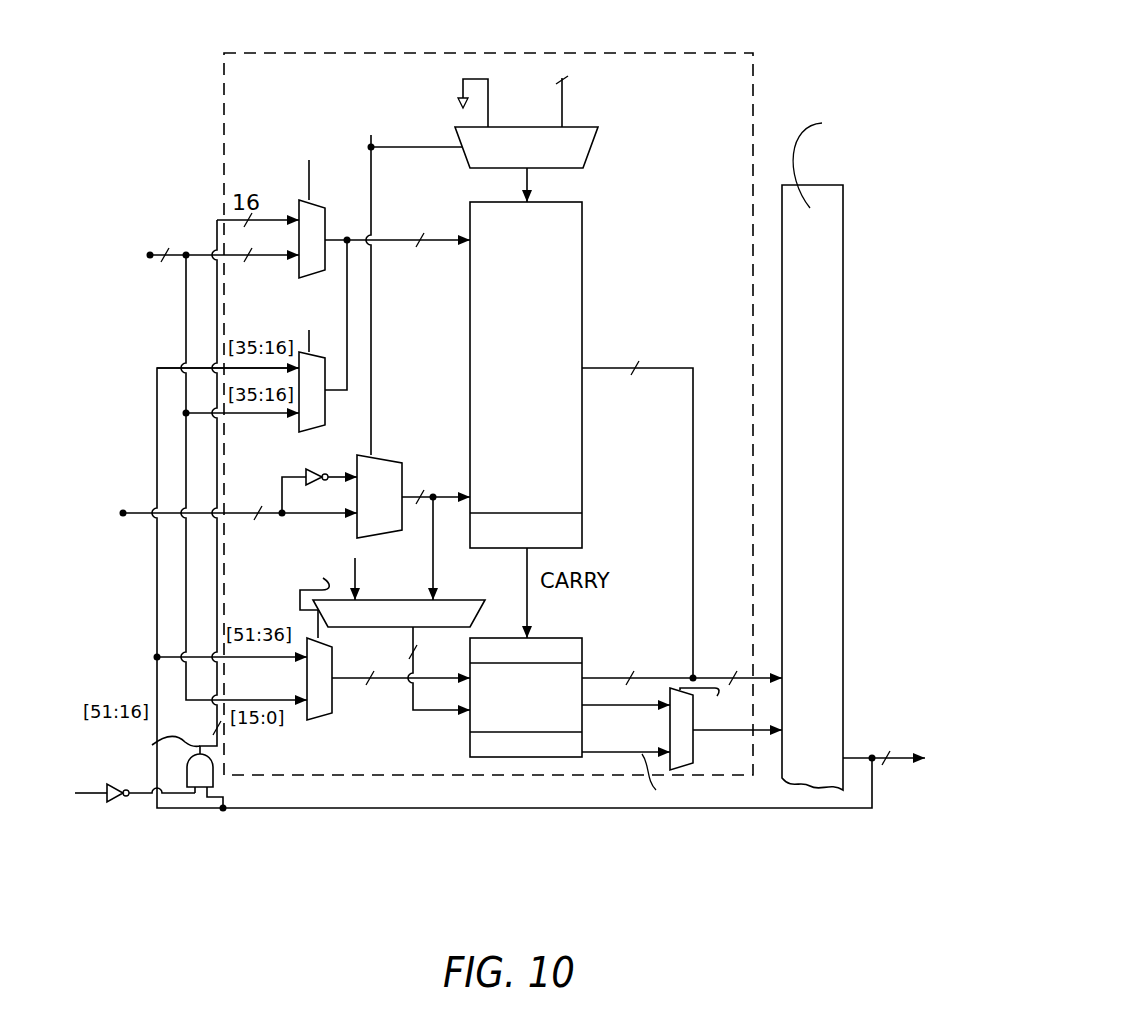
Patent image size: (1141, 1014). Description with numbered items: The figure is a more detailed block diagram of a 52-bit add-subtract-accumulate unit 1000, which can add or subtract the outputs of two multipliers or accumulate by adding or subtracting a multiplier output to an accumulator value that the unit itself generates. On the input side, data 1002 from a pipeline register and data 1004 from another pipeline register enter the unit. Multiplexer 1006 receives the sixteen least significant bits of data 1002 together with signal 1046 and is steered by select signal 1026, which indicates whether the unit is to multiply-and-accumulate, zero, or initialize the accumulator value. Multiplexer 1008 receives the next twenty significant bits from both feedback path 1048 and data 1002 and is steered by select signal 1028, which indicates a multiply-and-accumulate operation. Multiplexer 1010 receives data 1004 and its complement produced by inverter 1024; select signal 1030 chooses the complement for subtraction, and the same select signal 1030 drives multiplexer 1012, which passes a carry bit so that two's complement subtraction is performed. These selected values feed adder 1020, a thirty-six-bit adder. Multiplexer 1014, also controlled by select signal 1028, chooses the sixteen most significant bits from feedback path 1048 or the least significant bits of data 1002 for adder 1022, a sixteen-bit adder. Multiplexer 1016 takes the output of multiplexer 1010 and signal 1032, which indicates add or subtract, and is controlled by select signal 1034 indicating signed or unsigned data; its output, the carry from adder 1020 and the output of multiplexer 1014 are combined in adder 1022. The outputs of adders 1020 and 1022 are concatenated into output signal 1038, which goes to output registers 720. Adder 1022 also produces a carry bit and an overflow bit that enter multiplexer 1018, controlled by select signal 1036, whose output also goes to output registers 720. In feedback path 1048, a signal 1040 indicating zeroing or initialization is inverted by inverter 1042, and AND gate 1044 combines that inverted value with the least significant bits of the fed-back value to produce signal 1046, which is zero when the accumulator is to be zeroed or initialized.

The add-subtract-accumulate unit 1000 is at (358, 53).
The data 1002 is at (172, 252).
The data 1004 is at (143, 516).
The multiplexer 1006 is at (320, 206).
The multiplexer 1008 is at (325, 416).
The multiplexer 1010 is at (377, 460).
The multiplexer 1012 is at (597, 140).
The multiplexer 1014 is at (322, 718).
The multiplexer 1016 is at (477, 600).
The multiplexer 1018 is at (688, 768).
The adder 1020 is at (583, 290).
The adder 1022 is at (582, 663).
The inverter 1024 is at (313, 470).
The select signal 1026 is at (309, 160).
The select signal 1028 is at (309, 331).
The select signal 1030 is at (371, 135).
The signal 1032 is at (381, 577).
The select signal 1034 is at (300, 599).
The select signal 1036 is at (712, 704).
The output signal 1038 is at (705, 672).
The signal 1040 is at (80, 795).
The inverter 1042 is at (122, 800).
The AND gate 1044 is at (213, 772).
The signal 1046 is at (148, 744).
The feedback path 1048 is at (868, 756).
The output registers 720 is at (843, 302).
The feedback bus 52 is at (481, 826).